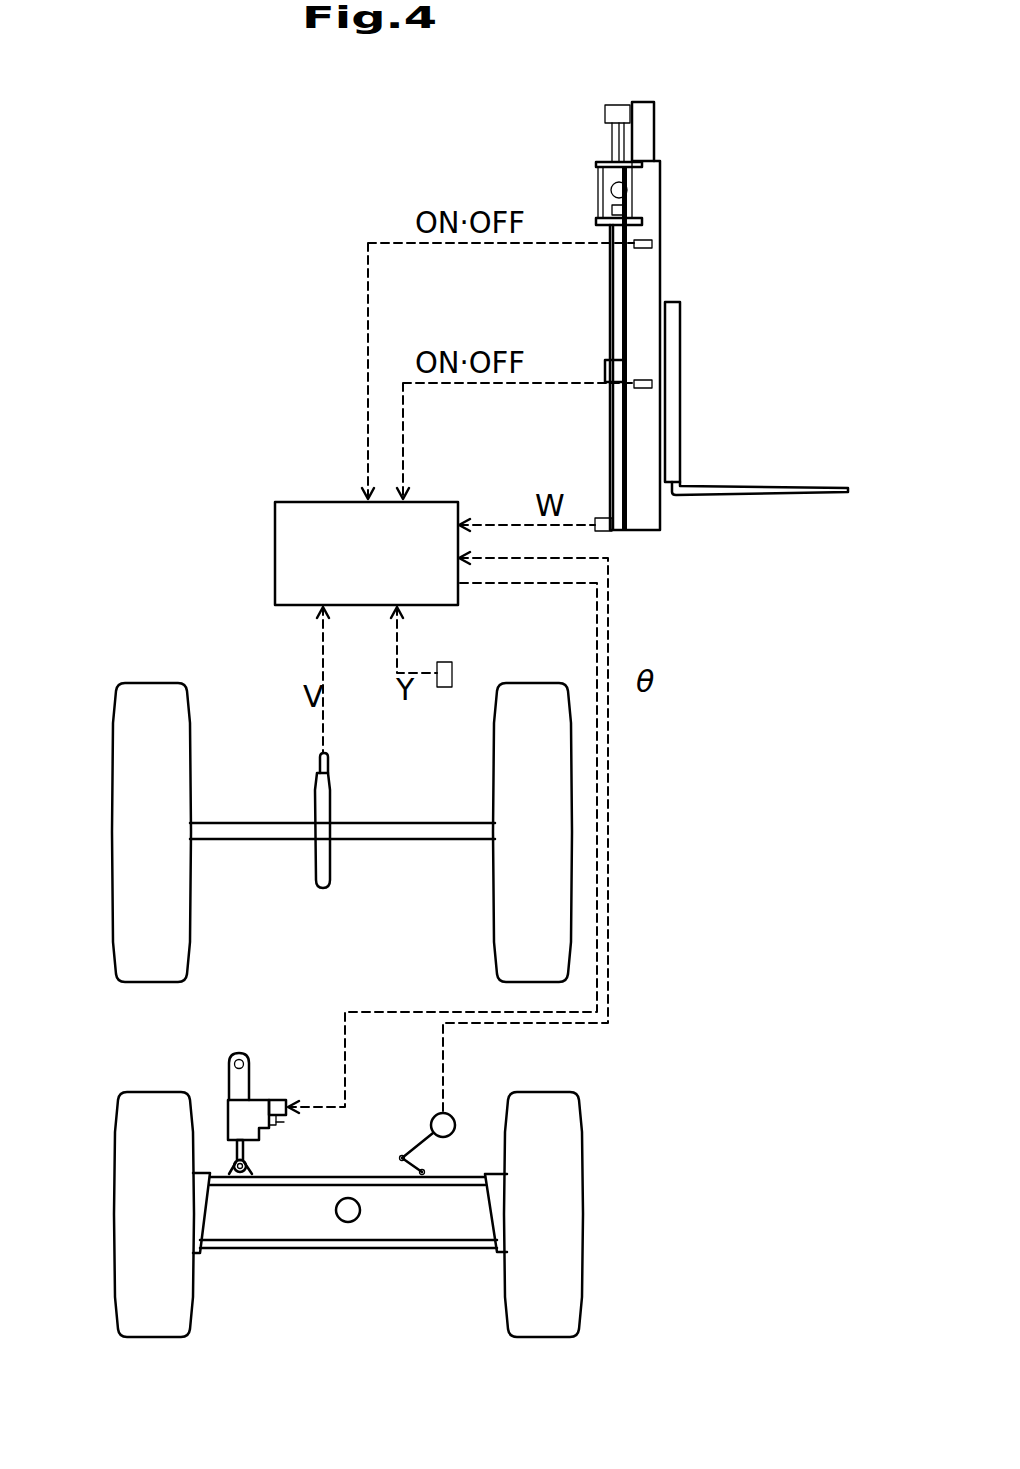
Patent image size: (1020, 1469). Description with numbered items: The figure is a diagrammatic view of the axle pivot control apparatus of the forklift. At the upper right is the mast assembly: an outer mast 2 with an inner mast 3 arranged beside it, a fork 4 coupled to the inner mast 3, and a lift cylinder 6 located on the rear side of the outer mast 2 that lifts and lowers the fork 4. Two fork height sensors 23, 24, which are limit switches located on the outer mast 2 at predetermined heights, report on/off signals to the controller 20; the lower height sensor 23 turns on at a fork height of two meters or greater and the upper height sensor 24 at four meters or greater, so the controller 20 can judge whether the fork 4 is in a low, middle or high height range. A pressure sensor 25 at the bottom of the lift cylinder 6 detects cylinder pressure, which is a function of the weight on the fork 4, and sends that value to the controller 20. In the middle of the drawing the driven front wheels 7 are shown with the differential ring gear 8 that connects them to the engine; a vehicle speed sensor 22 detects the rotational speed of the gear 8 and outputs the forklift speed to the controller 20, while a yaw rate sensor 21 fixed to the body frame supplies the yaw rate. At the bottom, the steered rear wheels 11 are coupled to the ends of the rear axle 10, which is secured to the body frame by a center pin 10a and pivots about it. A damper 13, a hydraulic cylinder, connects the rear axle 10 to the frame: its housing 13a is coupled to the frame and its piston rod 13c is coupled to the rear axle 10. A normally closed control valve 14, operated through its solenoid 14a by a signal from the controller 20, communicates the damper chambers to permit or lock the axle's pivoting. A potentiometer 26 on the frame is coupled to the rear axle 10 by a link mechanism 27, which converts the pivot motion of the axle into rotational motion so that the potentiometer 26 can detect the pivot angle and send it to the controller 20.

The outer mast 2 is at (662, 270).
The inner mast 3 is at (657, 130).
The fork 4 is at (771, 486).
The lift cylinder 6 is at (610, 318).
The front wheel 7 is at (151, 681).
The differential ring gear 8 is at (331, 802).
The rear axle 10 is at (408, 1250).
The center pin 10a is at (360, 1210).
The rear wheel 11 is at (115, 1216).
The damper (hydraulic cylinder) 13 is at (228, 1110).
The housing 13a is at (228, 1125).
The piston rod 13c is at (247, 1153).
The control valve 14 is at (278, 1100).
The solenoid 14a is at (287, 1122).
The controller 20 is at (275, 527).
The yaw rate sensor 21 is at (453, 672).
The vehicle speed sensor 22 is at (329, 765).
The fork height sensor 23 is at (648, 380).
The fork height sensor 24 is at (648, 240).
The pressure sensor 25 is at (594, 518).
The potentiometer 26 is at (452, 1114).
The link mechanism 27 is at (403, 1150).